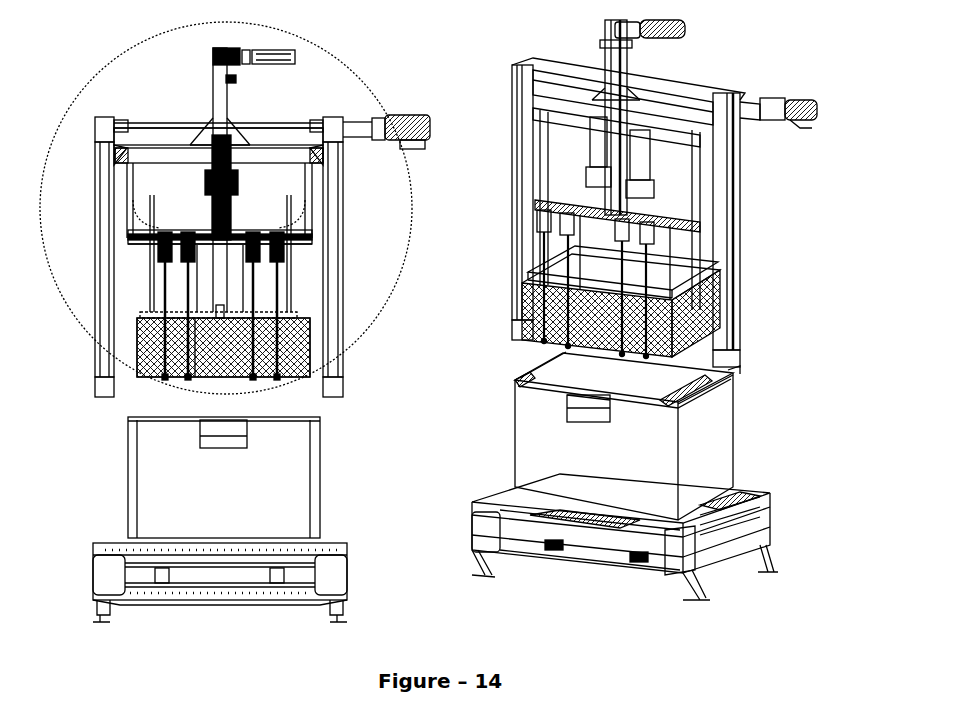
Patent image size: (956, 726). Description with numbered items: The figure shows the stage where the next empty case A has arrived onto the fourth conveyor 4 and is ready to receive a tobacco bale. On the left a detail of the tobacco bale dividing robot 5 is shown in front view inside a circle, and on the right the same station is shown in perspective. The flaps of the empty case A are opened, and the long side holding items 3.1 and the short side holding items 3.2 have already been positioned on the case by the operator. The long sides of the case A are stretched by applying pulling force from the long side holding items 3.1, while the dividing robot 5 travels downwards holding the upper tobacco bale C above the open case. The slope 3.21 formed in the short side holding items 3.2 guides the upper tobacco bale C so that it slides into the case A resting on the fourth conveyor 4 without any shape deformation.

The tobacco bale dividing robot 5 is at (412, 255).
The upper tobacco bale C is at (298, 338).
The slope 3.21 is at (311, 347).
The case A is at (322, 463).
The case long side holding items 3.1 is at (617, 410).
The case short side holding items 3.2 is at (668, 398).
The fourth conveyor 4 is at (557, 562).